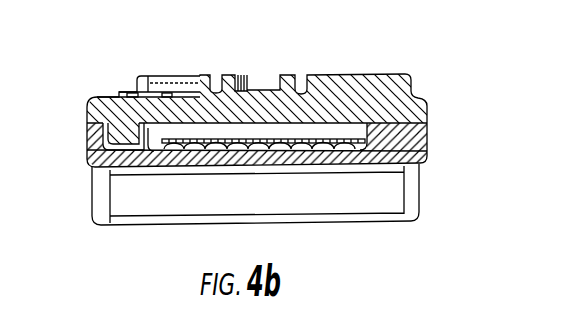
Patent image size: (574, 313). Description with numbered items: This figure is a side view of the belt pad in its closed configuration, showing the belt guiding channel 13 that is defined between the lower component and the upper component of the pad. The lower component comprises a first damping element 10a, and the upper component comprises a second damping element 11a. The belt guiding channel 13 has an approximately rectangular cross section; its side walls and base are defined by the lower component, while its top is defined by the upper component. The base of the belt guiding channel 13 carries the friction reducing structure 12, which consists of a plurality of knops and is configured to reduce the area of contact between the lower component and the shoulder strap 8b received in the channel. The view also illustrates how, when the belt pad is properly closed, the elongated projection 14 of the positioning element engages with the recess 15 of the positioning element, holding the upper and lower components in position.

The elongated projection 14 is at (112, 111).
The second damping element 11a is at (338, 84).
The belt guiding channel 13 is at (361, 122).
The shoulder strap 8b is at (367, 141).
The friction reducing structure 12 is at (400, 153).
The recess 15 is at (88, 150).
The first damping element 10a is at (377, 192).